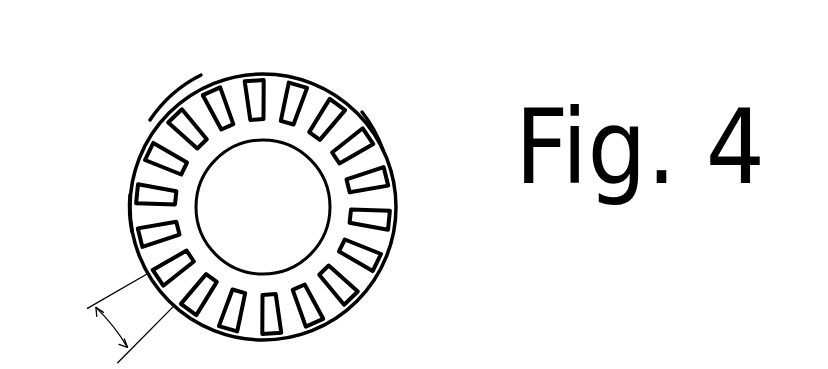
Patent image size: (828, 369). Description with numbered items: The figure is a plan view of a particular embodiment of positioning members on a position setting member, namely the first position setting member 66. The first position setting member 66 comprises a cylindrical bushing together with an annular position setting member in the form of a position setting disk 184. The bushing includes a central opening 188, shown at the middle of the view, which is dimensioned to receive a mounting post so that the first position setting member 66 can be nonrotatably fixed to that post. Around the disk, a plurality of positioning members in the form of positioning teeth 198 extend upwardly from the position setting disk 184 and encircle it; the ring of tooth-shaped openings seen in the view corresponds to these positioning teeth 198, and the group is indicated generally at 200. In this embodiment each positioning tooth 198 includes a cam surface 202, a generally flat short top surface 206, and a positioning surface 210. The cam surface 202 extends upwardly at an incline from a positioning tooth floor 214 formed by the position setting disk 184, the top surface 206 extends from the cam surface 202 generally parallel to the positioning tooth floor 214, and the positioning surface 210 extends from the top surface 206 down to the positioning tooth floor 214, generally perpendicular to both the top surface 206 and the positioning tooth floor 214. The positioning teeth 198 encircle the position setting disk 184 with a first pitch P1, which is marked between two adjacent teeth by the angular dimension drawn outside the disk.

The first position setting member 66 is at (103, 102).
The position setting disk 184 is at (130, 213).
The central opening 188 is at (281, 219).
The positioning teeth 198 is at (202, 87).
The slots 200 is at (263, 224).
The cam surface 202 is at (332, 107).
The top surface 206 is at (343, 123).
The positioning surface 210 is at (373, 132).
The positioning tooth floor 214 is at (315, 92).
The first pitch P1 is at (103, 333).